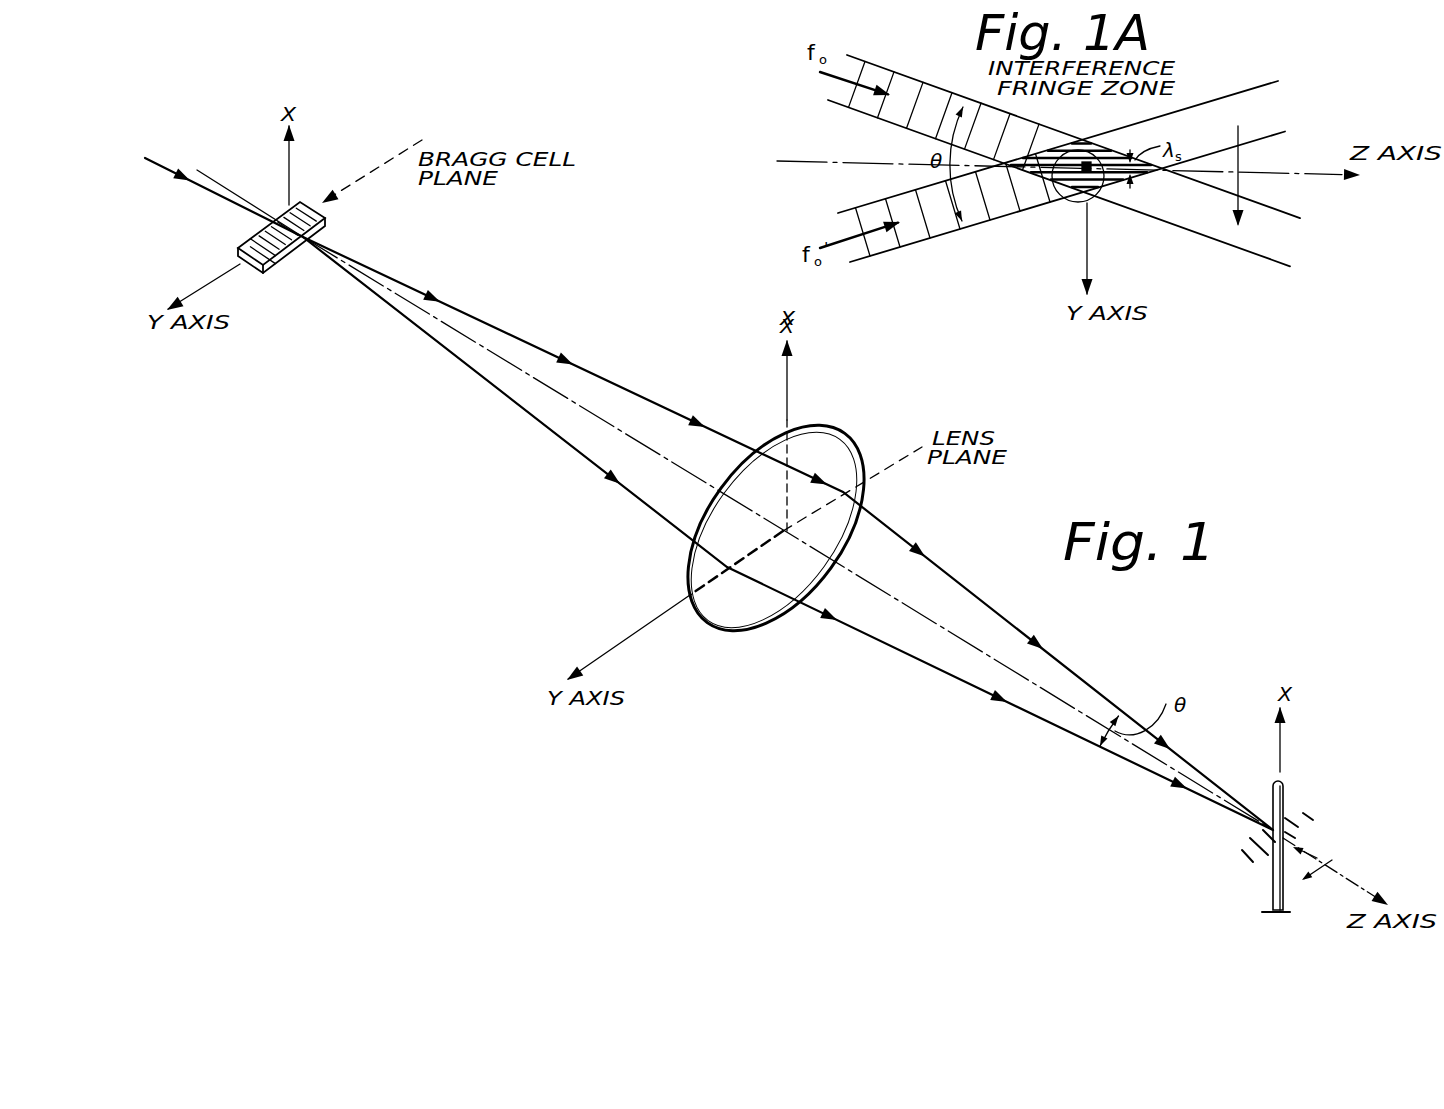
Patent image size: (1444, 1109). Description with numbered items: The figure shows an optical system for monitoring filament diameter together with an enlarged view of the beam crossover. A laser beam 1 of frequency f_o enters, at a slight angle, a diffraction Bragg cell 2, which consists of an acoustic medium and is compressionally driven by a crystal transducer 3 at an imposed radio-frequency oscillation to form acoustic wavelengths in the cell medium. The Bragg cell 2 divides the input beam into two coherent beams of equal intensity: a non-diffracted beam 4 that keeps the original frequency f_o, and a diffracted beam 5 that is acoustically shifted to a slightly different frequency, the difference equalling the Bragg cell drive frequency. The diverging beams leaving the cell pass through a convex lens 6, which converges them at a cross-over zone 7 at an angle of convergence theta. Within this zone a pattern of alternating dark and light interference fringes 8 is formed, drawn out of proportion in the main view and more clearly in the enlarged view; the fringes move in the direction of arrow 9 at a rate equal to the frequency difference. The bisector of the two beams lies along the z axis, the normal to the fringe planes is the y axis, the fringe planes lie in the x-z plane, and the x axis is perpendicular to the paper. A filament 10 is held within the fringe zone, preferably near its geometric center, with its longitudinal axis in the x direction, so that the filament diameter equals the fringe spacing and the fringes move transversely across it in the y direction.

In FIG. 1, the laser beam 1 is at (172, 178).
In FIG. 1, the diffraction Bragg cell 2 is at (327, 228).
In FIG. 1, the crystal transducer 3 is at (245, 267).
In FIG. 1, the non-diffracted beam 4 is at (642, 397).
In FIG. 1, the diffracted beam 5 is at (600, 472).
In FIG. 1, the convex lens 6 is at (822, 440).
In FIG. 1, the cross-over zone 7 is at (1228, 857).
In FIG. 1A, the cross-over zone 7 is at (1092, 103).
In FIG. 1, the interference fringes 8 is at (1307, 835).
In FIG. 1A, the interference fringes 8 is at (1056, 204).
In FIG. 1, the arrow 9 is at (1340, 857).
In FIG. 1A, the arrow 9 is at (1242, 128).
In FIG. 1, the filament 10 is at (1285, 800).
In FIG. 1A, the filament 10 is at (1102, 201).